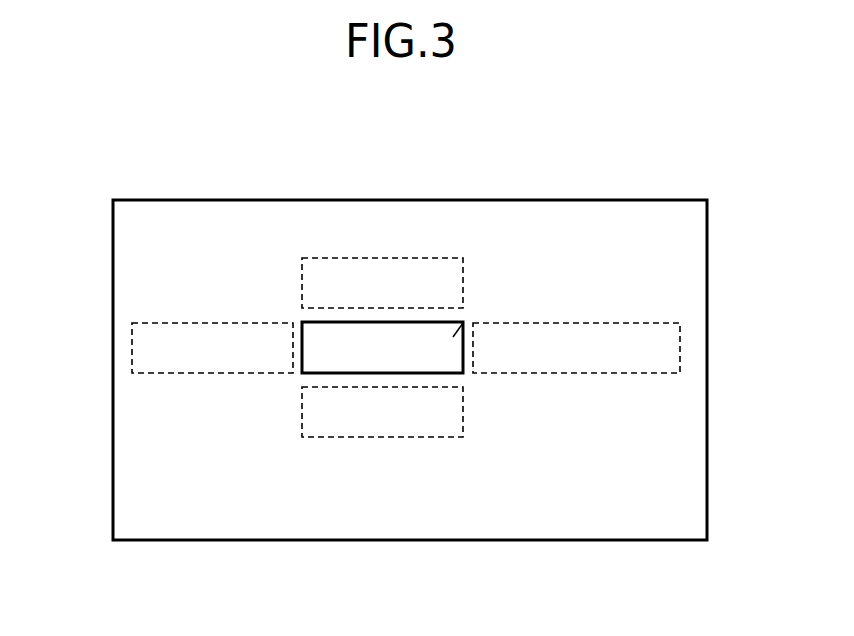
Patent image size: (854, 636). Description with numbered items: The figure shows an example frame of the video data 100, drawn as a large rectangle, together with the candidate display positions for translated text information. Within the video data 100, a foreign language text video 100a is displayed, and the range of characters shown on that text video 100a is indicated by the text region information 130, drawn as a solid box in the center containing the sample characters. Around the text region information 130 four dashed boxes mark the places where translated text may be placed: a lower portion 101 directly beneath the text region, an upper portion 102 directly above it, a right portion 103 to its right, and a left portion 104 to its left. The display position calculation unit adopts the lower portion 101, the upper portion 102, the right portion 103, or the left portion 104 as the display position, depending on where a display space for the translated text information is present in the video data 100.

The video data 100 is at (642, 200).
The foreign language text video 100a is at (463, 323).
The text region information 130 is at (327, 342).
The lower portion 101 is at (383, 427).
The upper portion 102 is at (434, 278).
The right portion 103 is at (660, 351).
The left portion 104 is at (155, 351).